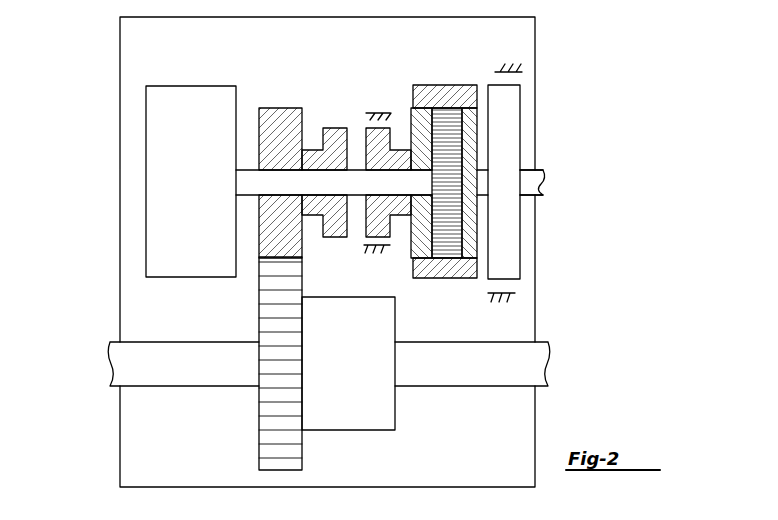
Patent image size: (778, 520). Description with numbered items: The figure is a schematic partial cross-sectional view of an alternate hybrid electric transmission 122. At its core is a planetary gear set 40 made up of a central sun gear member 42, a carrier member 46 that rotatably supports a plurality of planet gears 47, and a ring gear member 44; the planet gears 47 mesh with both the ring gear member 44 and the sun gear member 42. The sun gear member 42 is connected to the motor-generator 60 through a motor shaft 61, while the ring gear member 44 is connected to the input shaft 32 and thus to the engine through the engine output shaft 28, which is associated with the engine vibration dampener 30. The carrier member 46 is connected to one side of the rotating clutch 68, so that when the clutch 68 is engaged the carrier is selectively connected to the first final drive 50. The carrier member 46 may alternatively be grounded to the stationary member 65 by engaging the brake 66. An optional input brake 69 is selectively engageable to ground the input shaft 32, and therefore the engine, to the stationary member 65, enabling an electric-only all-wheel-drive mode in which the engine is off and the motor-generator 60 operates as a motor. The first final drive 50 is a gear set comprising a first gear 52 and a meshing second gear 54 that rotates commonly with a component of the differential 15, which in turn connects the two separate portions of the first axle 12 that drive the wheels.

The hybrid electric transmission 122 is at (120, 60).
The motor-generator 60 is at (200, 185).
The motor shaft 61 is at (247, 180).
The first gear 52 is at (278, 107).
The rotating clutch 68 is at (333, 120).
The brake 66 is at (357, 251).
The stationary member 65 is at (368, 112).
The planetary gear set 40 is at (480, 167).
The ring gear member 44 is at (448, 85).
The carrier member 46 is at (420, 217).
The planet gears 47 is at (453, 112).
The input shaft 32 is at (482, 168).
The sun gear member 42 is at (453, 182).
The engine output shaft 28 is at (528, 170).
The engine vibration dampener 30 is at (507, 263).
The input brake 69 is at (518, 283).
The first axle 12 is at (190, 342).
The first final drive 50 is at (275, 363).
The second gear 54 is at (259, 452).
The differential 15 is at (351, 374).